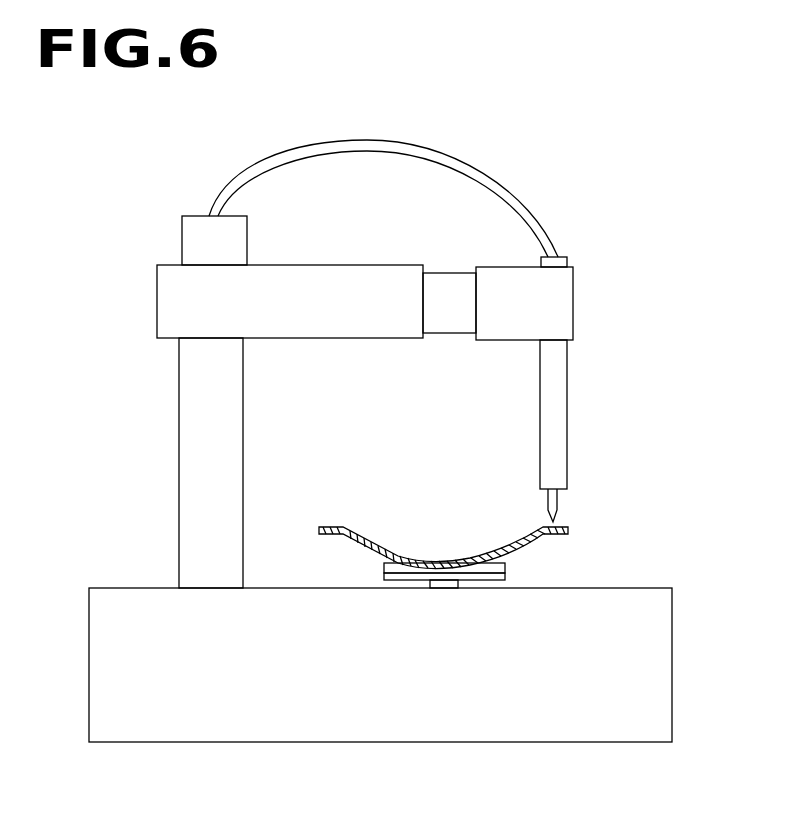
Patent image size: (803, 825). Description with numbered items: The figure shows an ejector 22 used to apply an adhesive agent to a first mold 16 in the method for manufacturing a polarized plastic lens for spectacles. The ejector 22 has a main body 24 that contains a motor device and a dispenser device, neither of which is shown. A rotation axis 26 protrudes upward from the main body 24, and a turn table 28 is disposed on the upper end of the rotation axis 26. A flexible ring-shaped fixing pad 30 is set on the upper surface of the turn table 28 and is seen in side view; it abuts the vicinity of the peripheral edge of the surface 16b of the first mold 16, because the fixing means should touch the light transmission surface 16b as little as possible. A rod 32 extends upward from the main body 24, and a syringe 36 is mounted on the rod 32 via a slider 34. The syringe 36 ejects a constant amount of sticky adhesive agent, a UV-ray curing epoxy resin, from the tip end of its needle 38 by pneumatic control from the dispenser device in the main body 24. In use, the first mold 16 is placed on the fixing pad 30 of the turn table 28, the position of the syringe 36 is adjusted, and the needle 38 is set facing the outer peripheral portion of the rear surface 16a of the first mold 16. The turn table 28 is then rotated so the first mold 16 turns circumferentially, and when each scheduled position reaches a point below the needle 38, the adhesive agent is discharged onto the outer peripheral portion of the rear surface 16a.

The ejector 22 is at (683, 178).
The main body 24 is at (125, 602).
The rod 32 is at (188, 401).
The slider 34 is at (378, 318).
The syringe 36 is at (550, 383).
The needle 38 is at (548, 504).
The first mold 16 is at (382, 548).
The rear surface 16a is at (567, 520).
The surface 16b is at (560, 537).
The fixing pad 30 is at (384, 570).
The turn table 28 is at (498, 577).
The rotation axis 26 is at (437, 592).